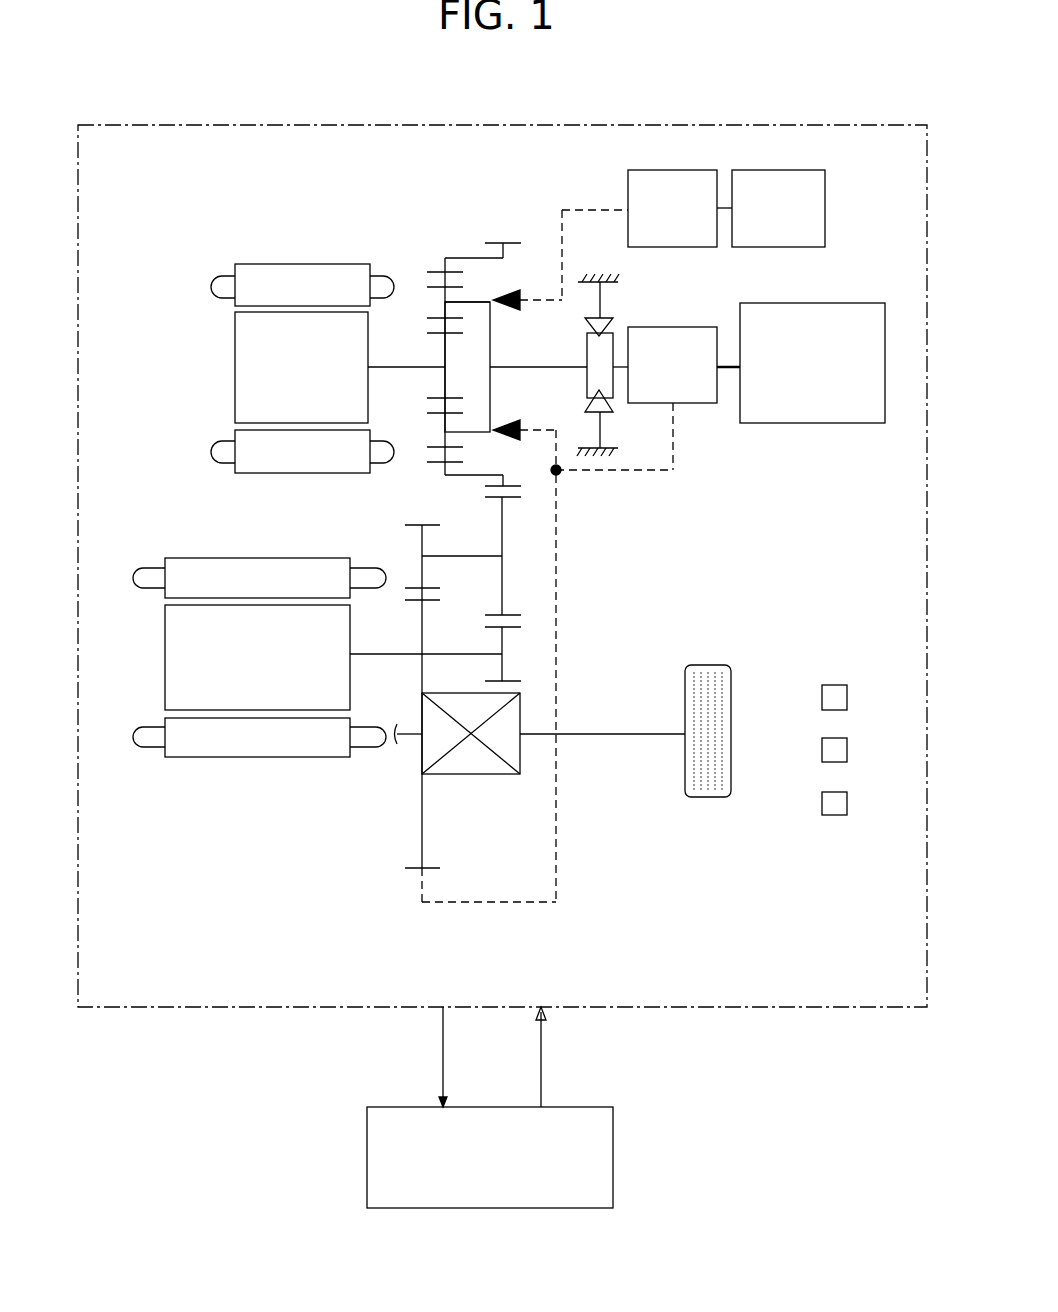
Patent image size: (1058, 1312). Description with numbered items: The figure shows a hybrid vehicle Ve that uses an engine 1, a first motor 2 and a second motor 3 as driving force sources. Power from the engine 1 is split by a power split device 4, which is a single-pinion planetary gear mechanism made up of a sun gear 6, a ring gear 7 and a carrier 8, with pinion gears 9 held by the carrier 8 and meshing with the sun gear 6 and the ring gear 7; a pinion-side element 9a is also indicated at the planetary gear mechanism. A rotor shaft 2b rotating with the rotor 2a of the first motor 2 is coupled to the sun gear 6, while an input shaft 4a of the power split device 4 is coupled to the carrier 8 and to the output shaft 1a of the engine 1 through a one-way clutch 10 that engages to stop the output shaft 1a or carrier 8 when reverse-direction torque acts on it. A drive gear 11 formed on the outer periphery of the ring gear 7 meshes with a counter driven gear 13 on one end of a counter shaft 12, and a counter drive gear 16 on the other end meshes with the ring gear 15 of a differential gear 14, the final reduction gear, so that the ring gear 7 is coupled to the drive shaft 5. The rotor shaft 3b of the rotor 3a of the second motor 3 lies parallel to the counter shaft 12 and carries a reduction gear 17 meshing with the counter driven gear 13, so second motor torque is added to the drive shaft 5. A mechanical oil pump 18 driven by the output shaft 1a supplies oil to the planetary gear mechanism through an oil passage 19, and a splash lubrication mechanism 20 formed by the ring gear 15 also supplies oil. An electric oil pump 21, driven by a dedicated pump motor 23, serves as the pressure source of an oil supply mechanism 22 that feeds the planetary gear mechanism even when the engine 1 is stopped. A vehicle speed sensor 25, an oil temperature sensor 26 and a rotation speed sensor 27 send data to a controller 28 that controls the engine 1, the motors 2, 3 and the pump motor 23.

The vehicle Ve is at (683, 123).
The engine 1 is at (815, 425).
The output shaft 1a is at (730, 364).
The first motor 2 is at (278, 354).
The rotor 2a is at (235, 376).
The rotor shaft 2b is at (405, 370).
The second motor 3 is at (245, 633).
The rotor 3a is at (165, 657).
The rotor shaft 3b is at (388, 652).
The power split device 4 is at (467, 348).
The input shaft 4a is at (535, 366).
The drive shaft 5 is at (614, 737).
The sun gear 6 is at (427, 326).
The ring gear 7 is at (427, 458).
The carrier 8 is at (490, 396).
The pinion gears 9 is at (427, 280).
The pinion bearing 9a is at (478, 300).
The one-way clutch 10 is at (622, 312).
The drive gear 11 is at (505, 220).
The counter shaft 12 is at (466, 555).
The counter driven gear 13 is at (485, 618).
The differential gear 14 is at (485, 790).
The ring gear 15 is at (410, 870).
The counter drive gear 16 is at (408, 524).
The reduction gear 17 is at (485, 680).
The oil pump 18 is at (690, 404).
The oil passage 19 is at (665, 472).
The splash lubrication mechanism 20 is at (580, 622).
The oil pump 21 is at (694, 248).
The oil supply mechanism 22 is at (545, 203).
The pump motor 23 is at (797, 248).
The vehicle speed sensor 25 is at (847, 698).
The oil temperature sensor 26 is at (847, 750).
The rotation speed sensor 27 is at (847, 804).
The controller 28 is at (613, 1152).